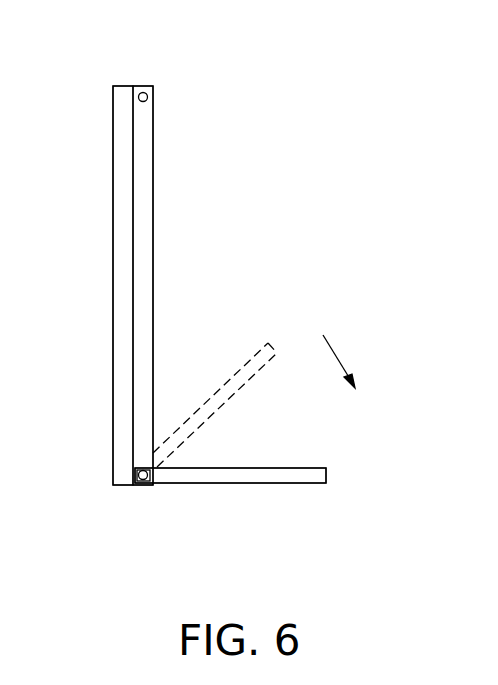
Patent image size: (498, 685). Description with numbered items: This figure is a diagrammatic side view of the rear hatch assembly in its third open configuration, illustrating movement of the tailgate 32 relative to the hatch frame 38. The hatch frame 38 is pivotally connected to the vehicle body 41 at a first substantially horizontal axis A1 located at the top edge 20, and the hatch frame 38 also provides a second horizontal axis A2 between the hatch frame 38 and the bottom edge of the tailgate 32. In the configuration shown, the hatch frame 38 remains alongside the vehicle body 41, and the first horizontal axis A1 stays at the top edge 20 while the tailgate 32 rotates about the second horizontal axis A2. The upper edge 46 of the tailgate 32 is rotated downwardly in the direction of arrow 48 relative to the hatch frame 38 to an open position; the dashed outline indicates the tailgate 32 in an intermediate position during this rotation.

The top edge 20 is at (136, 86).
The hatch frame 38 is at (153, 180).
The vehicle body 41 is at (122, 254).
The tailgate 32 is at (240, 483).
The upper edge 46 is at (326, 472).
The arrow 48 is at (340, 352).
The first horizontal axis A1 is at (145, 92).
The second horizontal axis A2 is at (143, 481).